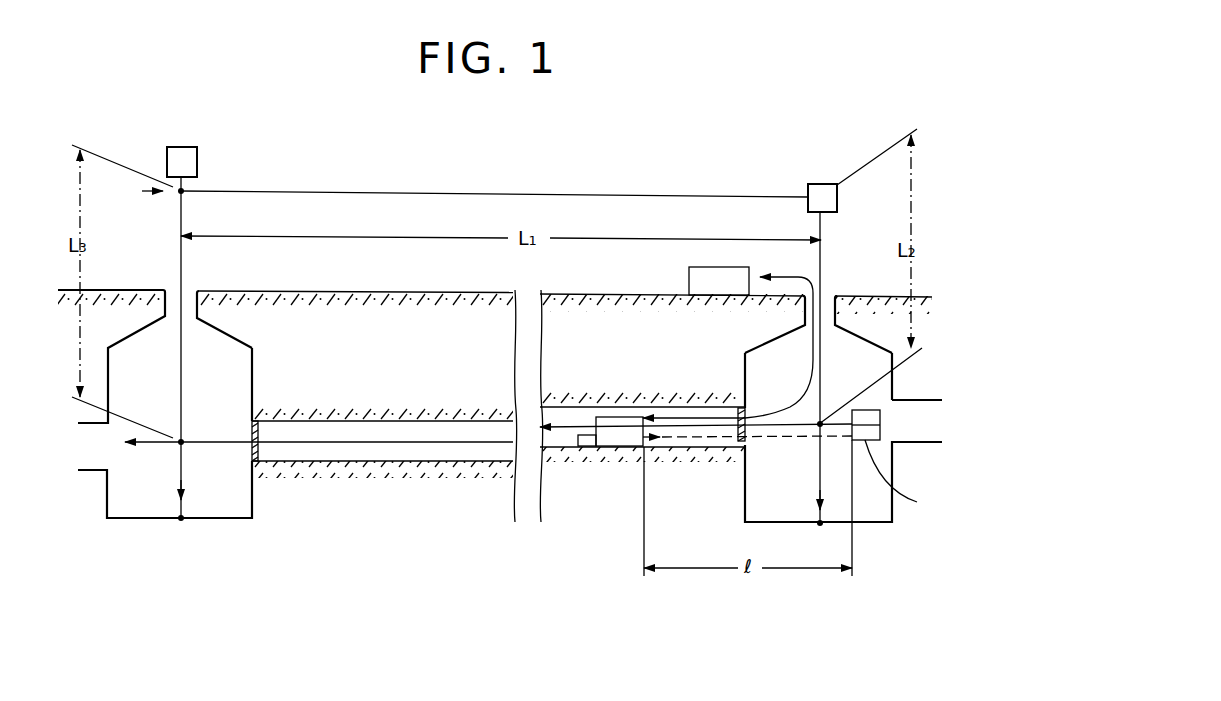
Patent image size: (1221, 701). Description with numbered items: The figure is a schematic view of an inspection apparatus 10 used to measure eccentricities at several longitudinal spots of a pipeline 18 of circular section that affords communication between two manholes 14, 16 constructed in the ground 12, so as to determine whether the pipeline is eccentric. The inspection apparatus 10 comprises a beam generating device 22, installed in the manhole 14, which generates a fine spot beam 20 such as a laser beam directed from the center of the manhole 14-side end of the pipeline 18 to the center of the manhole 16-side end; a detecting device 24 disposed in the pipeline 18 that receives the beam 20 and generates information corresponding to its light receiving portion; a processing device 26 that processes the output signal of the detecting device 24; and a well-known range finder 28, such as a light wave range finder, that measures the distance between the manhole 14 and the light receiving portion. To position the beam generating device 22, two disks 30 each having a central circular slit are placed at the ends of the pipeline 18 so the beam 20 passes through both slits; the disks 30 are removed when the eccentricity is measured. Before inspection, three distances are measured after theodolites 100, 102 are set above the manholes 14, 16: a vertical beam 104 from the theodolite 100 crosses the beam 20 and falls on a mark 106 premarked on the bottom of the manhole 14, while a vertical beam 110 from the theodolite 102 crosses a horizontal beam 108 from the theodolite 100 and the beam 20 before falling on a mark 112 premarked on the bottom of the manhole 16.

The inspection apparatus 10 is at (769, 185).
The ground 12 is at (288, 300).
The manhole 14 is at (887, 463).
The manhole 16 is at (223, 358).
The pipeline 18 is at (412, 419).
The beam 20 is at (440, 443).
The beam generating device 22 is at (873, 417).
The detecting device 24 is at (613, 433).
The processing device 26 is at (690, 282).
The range finder 28 is at (987, 478).
The disk 30 is at (259, 452).
The theodolite 100 is at (822, 183).
The theodolite 102 is at (197, 157).
The vertical beam 104 is at (821, 274).
The mark 106 is at (819, 526).
The horizontal beam 108 is at (626, 194).
The vertical beam 110 is at (181, 261).
The mark 112 is at (181, 518).